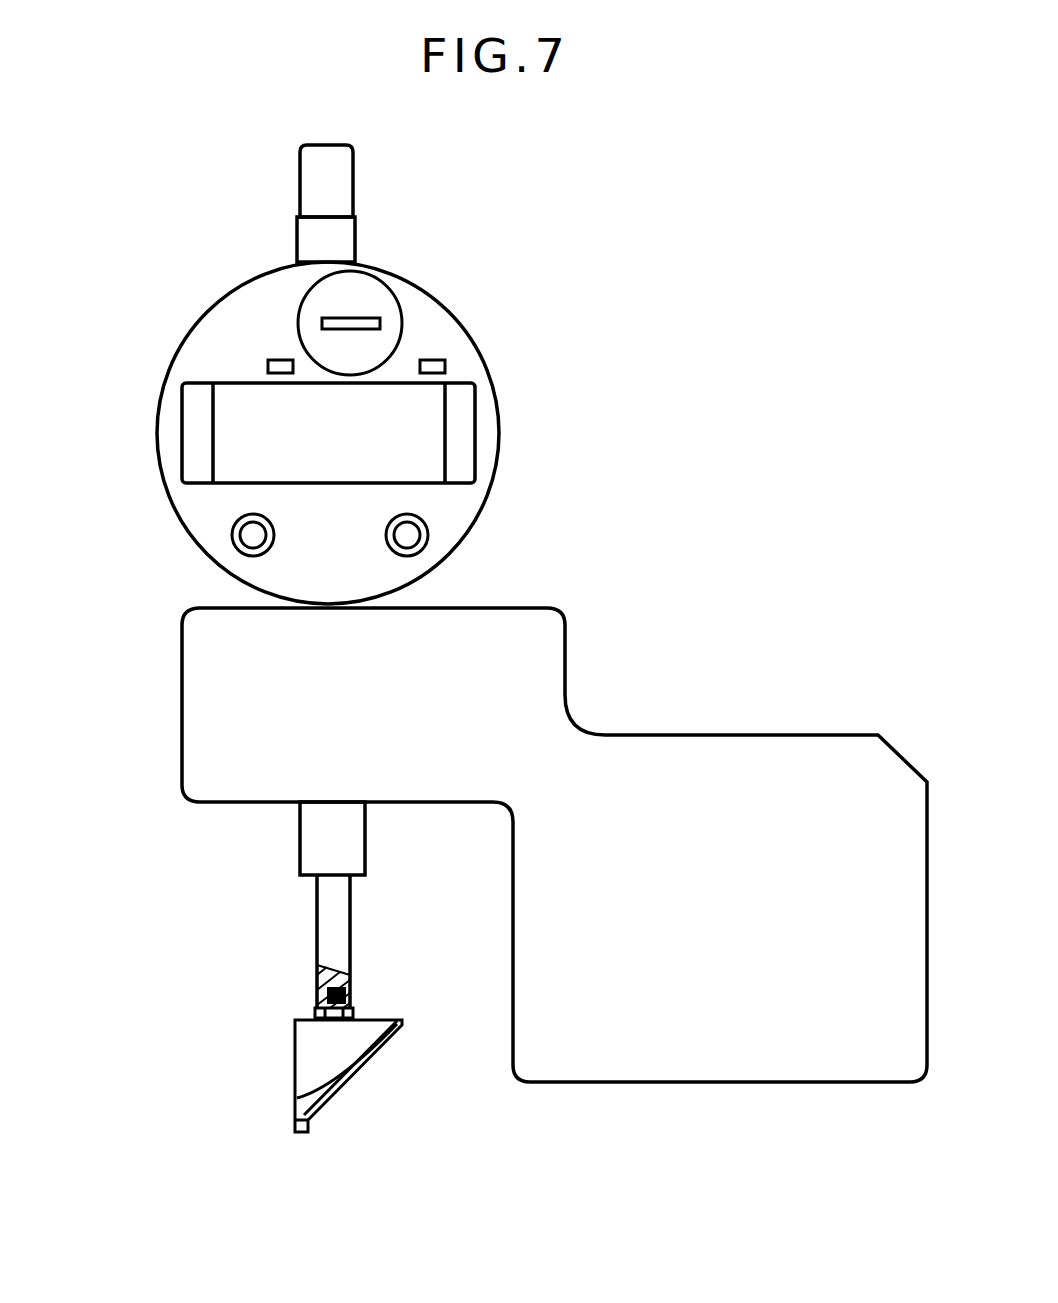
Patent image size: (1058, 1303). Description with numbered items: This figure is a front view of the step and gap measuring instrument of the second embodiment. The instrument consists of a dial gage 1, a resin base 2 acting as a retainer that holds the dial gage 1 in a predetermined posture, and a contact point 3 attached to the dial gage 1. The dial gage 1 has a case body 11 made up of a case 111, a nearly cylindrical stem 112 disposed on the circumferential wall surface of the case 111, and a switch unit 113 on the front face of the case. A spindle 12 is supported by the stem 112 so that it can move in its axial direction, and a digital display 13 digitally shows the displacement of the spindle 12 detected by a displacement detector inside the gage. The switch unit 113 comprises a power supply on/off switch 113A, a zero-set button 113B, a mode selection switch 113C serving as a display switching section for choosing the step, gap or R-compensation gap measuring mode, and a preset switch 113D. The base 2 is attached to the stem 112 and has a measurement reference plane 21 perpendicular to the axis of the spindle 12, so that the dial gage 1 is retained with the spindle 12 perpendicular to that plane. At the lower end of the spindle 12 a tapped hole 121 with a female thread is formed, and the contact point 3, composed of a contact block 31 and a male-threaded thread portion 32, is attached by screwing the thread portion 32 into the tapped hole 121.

The dial gage 1 is at (381, 576).
The case body 11 is at (381, 374).
The case 111 is at (202, 547).
The stem 112 is at (300, 832).
The spindle 12 is at (333, 941).
The tapped hole 121 is at (346, 990).
The digital display 13 is at (428, 484).
The switch unit 113 is at (482, 454).
The power supply on/off switch 113A is at (445, 366).
The zero-set button 113B is at (428, 543).
The mode selection switch 113C is at (293, 367).
The preset switch 113D is at (272, 548).
The base 2 is at (554, 893).
The measurement reference plane 21 is at (727, 1085).
The contact point 3 is at (284, 1056).
The contact block 31 is at (305, 1055).
The thread portion 32 is at (317, 1000).